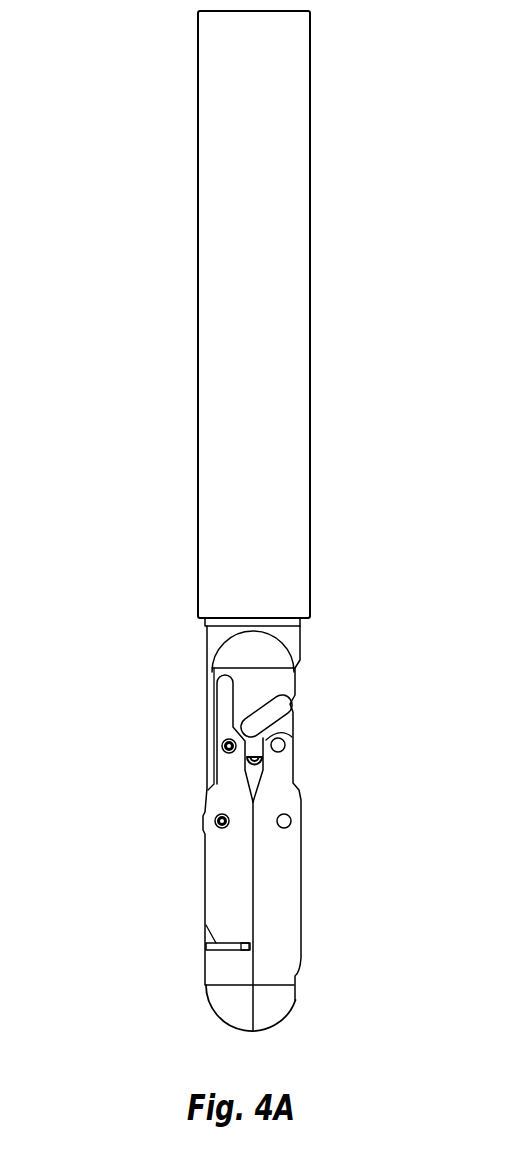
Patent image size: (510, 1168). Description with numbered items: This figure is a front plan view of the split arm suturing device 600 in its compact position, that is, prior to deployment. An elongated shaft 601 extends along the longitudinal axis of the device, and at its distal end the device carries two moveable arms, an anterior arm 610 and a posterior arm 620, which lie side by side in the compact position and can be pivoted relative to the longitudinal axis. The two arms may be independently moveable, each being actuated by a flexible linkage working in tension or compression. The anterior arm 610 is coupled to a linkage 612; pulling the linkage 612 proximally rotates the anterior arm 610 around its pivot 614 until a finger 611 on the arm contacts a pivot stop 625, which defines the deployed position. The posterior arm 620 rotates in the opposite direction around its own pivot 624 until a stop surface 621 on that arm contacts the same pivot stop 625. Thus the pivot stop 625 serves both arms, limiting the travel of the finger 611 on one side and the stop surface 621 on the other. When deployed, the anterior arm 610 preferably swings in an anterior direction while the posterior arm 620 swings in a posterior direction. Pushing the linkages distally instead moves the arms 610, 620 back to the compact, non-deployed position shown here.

The split arm suturing device 600 is at (119, 458).
The elongated shaft 601 is at (218, 357).
The anterior arm 610 is at (222, 874).
The finger 611 is at (222, 692).
The linkage 612 is at (205, 710).
The pivot 614 is at (222, 748).
The posterior arm 620 is at (280, 860).
The stop surface 621 is at (294, 760).
The pivot 624 is at (278, 745).
The pivot stop 625 is at (272, 712).